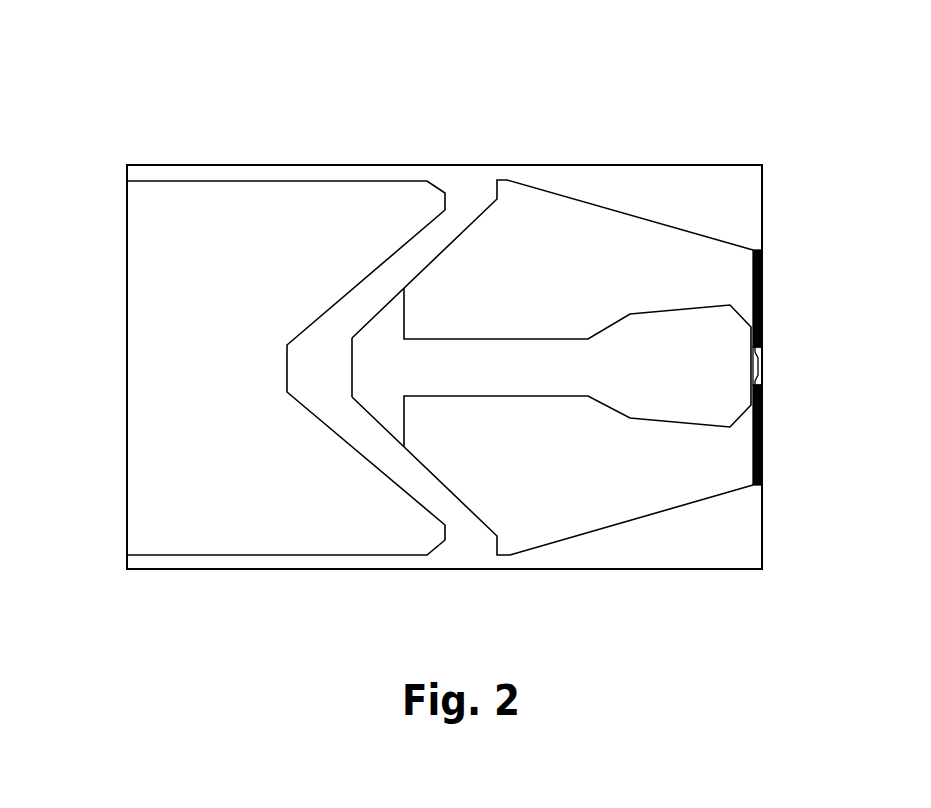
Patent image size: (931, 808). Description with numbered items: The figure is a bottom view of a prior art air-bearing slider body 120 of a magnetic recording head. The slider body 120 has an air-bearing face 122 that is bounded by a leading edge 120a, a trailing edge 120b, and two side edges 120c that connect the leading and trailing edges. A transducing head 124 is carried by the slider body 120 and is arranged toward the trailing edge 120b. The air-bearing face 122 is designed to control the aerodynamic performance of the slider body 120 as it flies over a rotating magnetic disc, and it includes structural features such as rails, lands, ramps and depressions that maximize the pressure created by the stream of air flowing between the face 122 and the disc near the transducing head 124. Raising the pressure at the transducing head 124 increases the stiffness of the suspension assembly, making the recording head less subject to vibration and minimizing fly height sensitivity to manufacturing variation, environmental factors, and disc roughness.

The air-bearing slider body 120 is at (475, 89).
The leading edge 120a is at (127, 245).
The trailing edge 120b is at (763, 185).
The side edges 120c is at (295, 165).
The air-bearing face 122 is at (583, 190).
The transducing head 124 is at (750, 364).